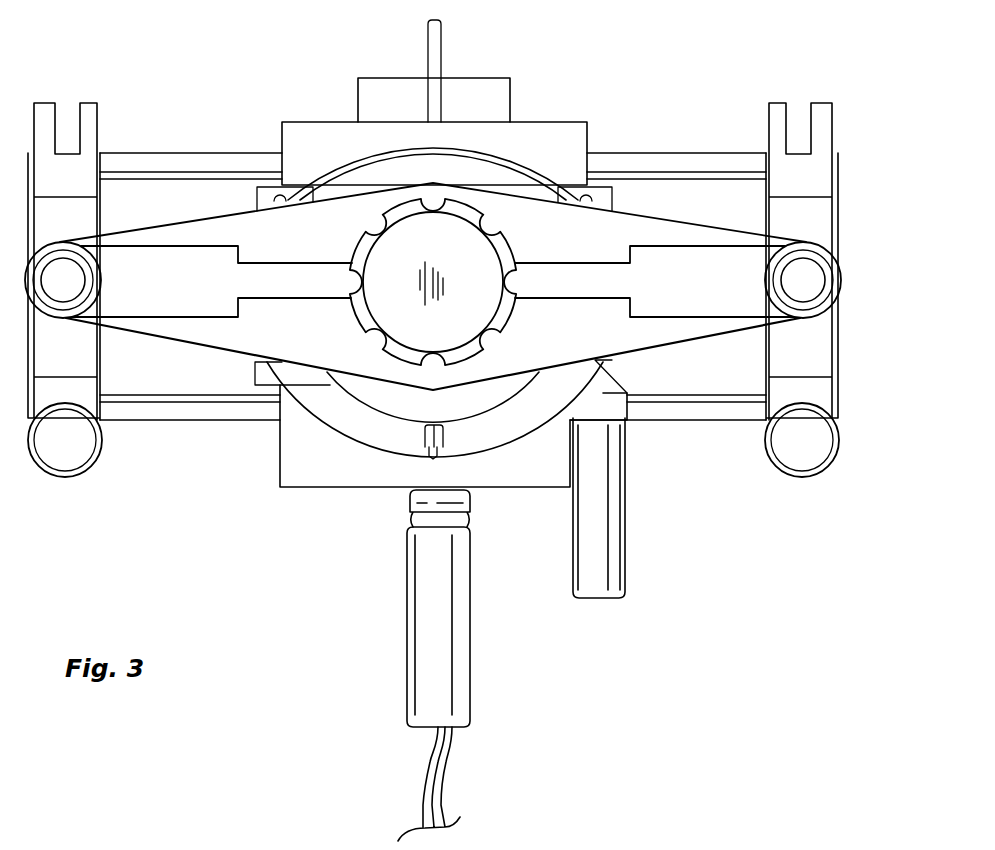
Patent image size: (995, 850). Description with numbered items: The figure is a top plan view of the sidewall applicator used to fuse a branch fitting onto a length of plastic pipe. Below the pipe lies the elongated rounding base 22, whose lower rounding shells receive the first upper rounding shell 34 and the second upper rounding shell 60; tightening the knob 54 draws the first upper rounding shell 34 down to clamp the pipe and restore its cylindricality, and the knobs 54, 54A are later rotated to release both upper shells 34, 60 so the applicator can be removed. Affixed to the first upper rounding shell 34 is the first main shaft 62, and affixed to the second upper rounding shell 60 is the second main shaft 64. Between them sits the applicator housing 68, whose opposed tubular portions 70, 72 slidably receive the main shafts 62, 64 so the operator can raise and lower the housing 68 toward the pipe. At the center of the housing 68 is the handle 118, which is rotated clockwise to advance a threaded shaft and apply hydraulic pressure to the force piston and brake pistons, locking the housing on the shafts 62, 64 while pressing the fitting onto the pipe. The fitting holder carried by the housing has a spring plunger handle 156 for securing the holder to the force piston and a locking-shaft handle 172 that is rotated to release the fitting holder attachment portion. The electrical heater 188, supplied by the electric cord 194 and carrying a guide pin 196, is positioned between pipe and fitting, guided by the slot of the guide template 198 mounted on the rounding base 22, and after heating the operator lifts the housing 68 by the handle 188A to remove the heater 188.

The rounding base 22 is at (618, 158).
The first upper rounding shell 34 is at (810, 363).
The knob 54 is at (817, 473).
The knob 54A is at (97, 458).
The second upper rounding shell 60 is at (73, 348).
The first main shaft 62 is at (827, 265).
The second main shaft 64 is at (90, 287).
The applicator housing 68 is at (652, 337).
The tubular portion 70 is at (841, 290).
The tubular portion 72 is at (32, 270).
The handle 118 is at (408, 258).
The handle 156 is at (427, 458).
The handle 172 is at (602, 567).
The electrical heater 188 is at (431, 608).
The handle 188A is at (458, 673).
The electric cord 194 is at (452, 765).
The guide pin 196 is at (435, 50).
The guide template 198 is at (493, 77).